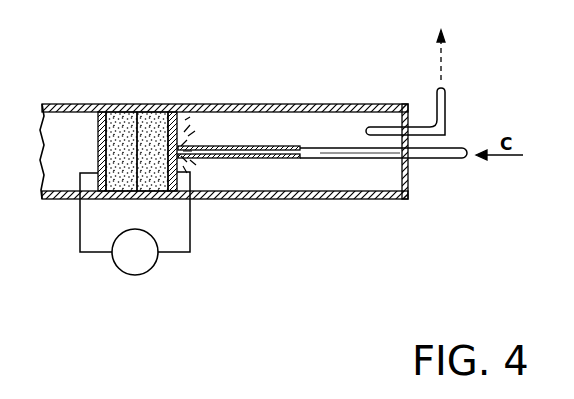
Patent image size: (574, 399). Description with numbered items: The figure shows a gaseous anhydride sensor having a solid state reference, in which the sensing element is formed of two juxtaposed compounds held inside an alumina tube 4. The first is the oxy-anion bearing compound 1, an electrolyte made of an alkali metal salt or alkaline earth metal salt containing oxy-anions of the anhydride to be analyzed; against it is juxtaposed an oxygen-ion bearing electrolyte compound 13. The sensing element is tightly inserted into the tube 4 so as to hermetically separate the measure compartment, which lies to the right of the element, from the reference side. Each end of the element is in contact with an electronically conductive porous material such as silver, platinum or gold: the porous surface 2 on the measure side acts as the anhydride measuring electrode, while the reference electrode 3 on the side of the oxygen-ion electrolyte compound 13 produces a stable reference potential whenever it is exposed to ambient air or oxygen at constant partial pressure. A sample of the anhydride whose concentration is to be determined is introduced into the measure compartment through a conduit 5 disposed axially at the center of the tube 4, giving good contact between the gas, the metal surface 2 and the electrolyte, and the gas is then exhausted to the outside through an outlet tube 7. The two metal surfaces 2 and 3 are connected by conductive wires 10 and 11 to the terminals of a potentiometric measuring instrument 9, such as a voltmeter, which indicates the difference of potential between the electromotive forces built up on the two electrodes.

The oxy-anion bearing compound 1 is at (152, 128).
The electronically conductive porous material 2 is at (182, 126).
The reference electrode 3 is at (99, 130).
The tube 4 is at (404, 200).
The conduit 5 is at (452, 159).
The outlet tube 7 is at (446, 97).
The potentiometric measuring instrument 9 is at (133, 275).
The conductive wire 10 is at (190, 234).
The conductive wire 11 is at (80, 223).
The oxygen-ion bearing electrolyte compound 13 is at (124, 128).